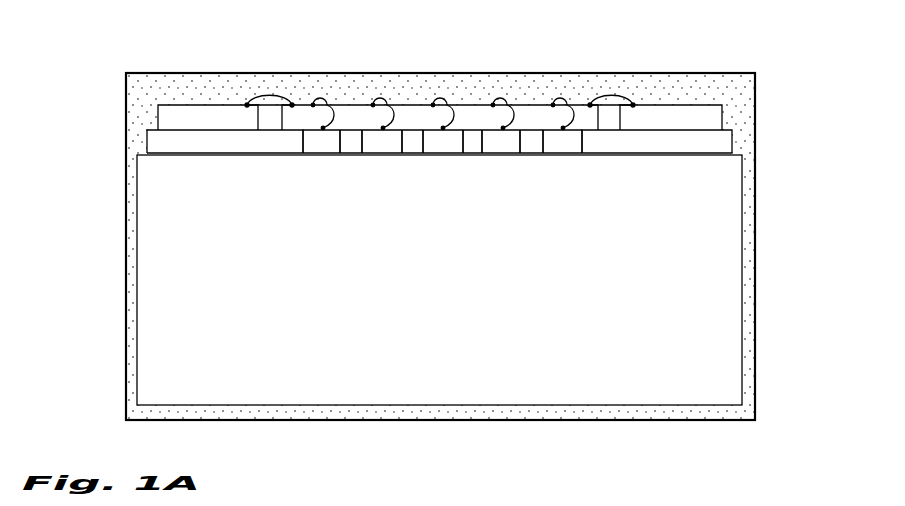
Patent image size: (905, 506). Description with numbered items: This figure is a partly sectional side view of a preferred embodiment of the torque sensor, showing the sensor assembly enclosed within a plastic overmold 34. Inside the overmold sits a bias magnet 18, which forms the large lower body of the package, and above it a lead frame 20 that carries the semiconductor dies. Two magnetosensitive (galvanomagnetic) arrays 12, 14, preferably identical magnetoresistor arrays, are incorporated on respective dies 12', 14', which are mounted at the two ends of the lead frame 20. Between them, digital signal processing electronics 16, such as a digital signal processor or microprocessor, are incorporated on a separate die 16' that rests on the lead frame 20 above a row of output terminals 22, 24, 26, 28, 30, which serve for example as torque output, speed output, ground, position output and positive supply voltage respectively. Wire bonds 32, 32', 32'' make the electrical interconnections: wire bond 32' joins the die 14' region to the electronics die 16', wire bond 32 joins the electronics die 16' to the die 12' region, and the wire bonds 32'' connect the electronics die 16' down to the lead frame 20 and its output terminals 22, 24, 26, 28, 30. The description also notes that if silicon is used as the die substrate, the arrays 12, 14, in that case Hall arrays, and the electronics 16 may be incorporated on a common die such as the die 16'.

The magnetosensitive array 12 is at (671, 65).
The die 12' is at (658, 82).
The magnetosensitive array 14 is at (202, 79).
The die 14' is at (225, 90).
The digital signal processing electronics 16 is at (440, 75).
The die 16' is at (442, 88).
The bias magnet 18 is at (522, 393).
The lead frame 20 is at (242, 147).
The output terminal 22 is at (553, 147).
The output terminal 24 is at (517, 147).
The output terminal 26 is at (452, 146).
The output terminal 28 is at (390, 147).
The output terminal 30 is at (325, 147).
The wire bond 32 is at (619, 65).
The wire bond 32' is at (281, 67).
The wire bonds 32'' is at (442, 76).
The plastic overmold 34 is at (138, 73).